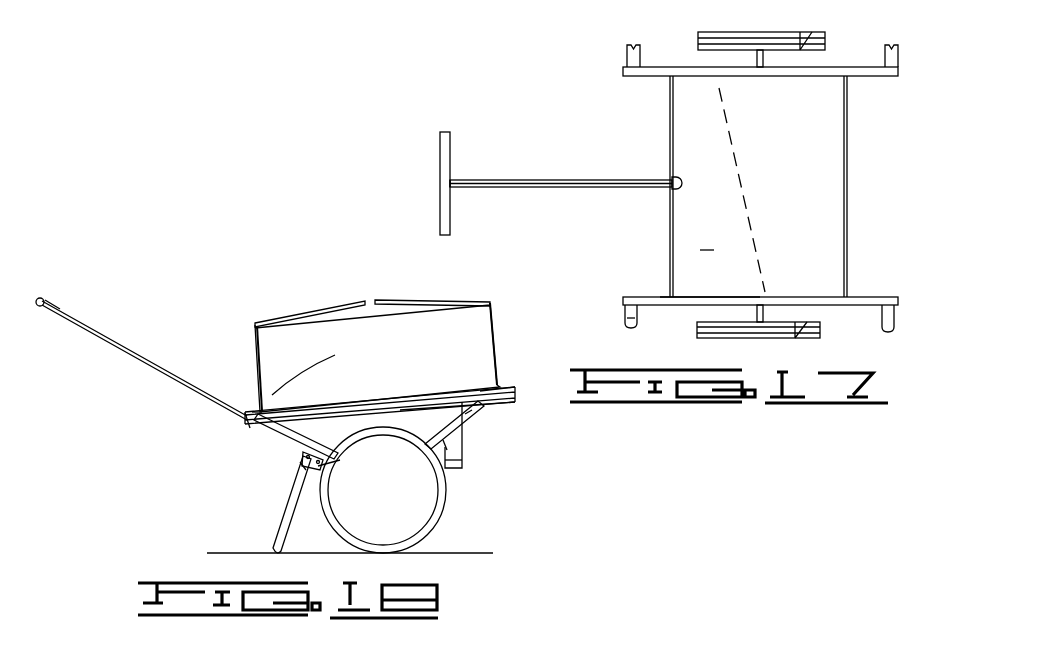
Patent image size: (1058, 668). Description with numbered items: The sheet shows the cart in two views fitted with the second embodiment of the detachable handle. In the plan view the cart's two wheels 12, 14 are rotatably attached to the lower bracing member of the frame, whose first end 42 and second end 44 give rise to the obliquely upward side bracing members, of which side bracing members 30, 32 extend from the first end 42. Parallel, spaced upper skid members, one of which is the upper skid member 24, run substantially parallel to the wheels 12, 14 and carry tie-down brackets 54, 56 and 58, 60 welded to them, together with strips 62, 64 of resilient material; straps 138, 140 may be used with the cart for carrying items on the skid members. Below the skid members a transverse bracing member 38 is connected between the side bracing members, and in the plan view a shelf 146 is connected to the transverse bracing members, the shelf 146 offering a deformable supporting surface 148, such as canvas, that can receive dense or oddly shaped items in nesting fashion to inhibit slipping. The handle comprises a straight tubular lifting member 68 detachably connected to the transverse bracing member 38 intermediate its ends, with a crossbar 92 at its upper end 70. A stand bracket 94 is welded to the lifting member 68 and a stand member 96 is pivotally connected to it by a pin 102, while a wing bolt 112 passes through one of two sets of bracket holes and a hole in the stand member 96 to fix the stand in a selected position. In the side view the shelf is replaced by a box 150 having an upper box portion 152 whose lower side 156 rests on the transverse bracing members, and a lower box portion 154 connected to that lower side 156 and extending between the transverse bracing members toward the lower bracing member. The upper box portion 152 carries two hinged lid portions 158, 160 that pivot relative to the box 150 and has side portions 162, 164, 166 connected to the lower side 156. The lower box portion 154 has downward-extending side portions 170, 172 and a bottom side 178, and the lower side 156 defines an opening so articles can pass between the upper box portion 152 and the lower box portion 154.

In FIG. 17, the wheel 12 is at (800, 338).
In FIG. 18, the wheel 12 is at (418, 530).
In FIG. 17, the wheel 14 is at (800, 46).
In FIG. 18, the upper skid member 24 is at (505, 408).
In FIG. 18, the side bracing member 30 is at (292, 440).
In FIG. 18, the side bracing member 32 is at (470, 418).
In FIG. 17, the transverse bracing member 38 is at (670, 185).
In FIG. 17, the first end of the lower bracing member 42 is at (760, 298).
In FIG. 17, the second end of the lower bracing member 44 is at (761, 58).
In FIG. 17, the tie-down bracket 54 is at (900, 306).
In FIG. 18, the tie-down bracket 54 is at (507, 398).
In FIG. 17, the tie-down bracket 56 is at (624, 309).
In FIG. 18, the tie-down bracket 56 is at (248, 426).
In FIG. 17, the tie-down bracket 58 is at (900, 72).
In FIG. 17, the tie-down bracket 60 is at (625, 63).
In FIG. 17, the strip of resilient material 62 is at (686, 301).
In FIG. 17, the strip of resilient material 64 is at (673, 68).
In FIG. 17, the lifting member 68 is at (548, 180).
In FIG. 18, the lifting member 68 is at (115, 340).
In FIG. 17, the upper end of the lifting member 70 is at (452, 180).
In FIG. 18, the upper end of the lifting member 70 is at (58, 306).
In FIG. 17, the crossbar 92 is at (446, 132).
In FIG. 18, the crossbar 92 is at (40, 298).
In FIG. 18, the stand bracket 94 is at (299, 466).
In FIG. 18, the stand member 96 is at (290, 522).
In FIG. 18, the pin 102 is at (320, 462).
In FIG. 18, the wing bolt 112 is at (318, 470).
In FIG. 17, the strap 138 is at (628, 324).
In FIG. 17, the strap 140 is at (882, 327).
In FIG. 17, the shelf 146 is at (704, 250).
In FIG. 17, the deformable supporting surface 148 is at (848, 233).
In FIG. 18, the box 150 is at (505, 350).
In FIG. 18, the upper box portion 152 is at (263, 363).
In FIG. 18, the lower box portion 154 is at (463, 458).
In FIG. 18, the lower side of the upper box portion 156 is at (490, 390).
In FIG. 18, the hinged lid portion 158 is at (393, 300).
In FIG. 18, the hinged lid portion 160 is at (312, 312).
In FIG. 18, the side portion 162 is at (242, 415).
In FIG. 18, the side portion 164 is at (493, 307).
In FIG. 18, the side portion 166 is at (254, 338).
In FIG. 18, the side portion 170 is at (445, 480).
In FIG. 18, the side portion 172 is at (449, 450).
In FIG. 18, the bottom side 178 is at (446, 468).